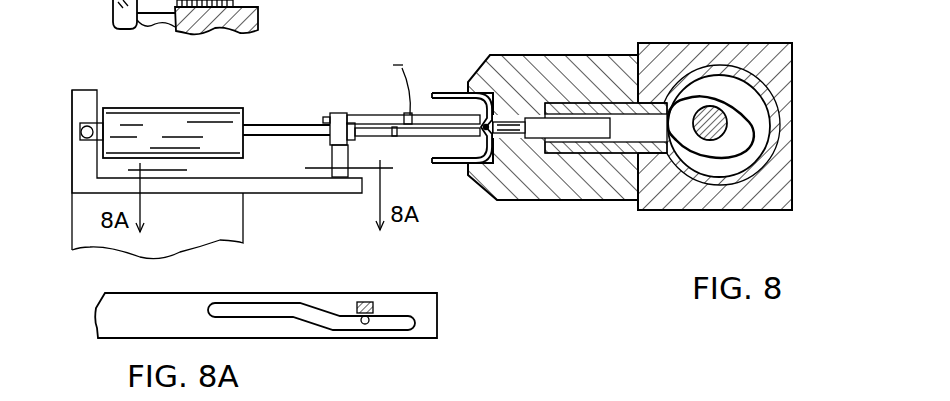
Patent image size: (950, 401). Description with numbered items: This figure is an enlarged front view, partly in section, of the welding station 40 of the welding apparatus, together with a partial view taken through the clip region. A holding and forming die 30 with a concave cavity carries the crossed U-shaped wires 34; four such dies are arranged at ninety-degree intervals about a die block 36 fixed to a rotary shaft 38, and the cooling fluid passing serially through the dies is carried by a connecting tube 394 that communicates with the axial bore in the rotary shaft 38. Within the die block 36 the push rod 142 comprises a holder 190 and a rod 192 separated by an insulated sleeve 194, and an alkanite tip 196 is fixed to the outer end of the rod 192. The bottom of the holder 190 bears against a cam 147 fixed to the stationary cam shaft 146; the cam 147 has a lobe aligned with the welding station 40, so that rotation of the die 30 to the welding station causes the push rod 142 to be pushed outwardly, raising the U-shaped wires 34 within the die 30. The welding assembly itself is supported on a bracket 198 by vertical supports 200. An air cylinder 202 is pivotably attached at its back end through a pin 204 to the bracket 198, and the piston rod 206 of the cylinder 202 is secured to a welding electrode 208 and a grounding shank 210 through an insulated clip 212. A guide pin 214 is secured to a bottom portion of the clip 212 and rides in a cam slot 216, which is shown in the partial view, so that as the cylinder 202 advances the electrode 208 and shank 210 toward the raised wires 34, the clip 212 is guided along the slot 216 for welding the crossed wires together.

In FIG. 8, the holding and forming die 30 is at (497, 72).
In FIG. 8, the U-shaped wires 34 is at (432, 93).
In FIG. 8, the die block 36 is at (775, 70).
In FIG. 8, the rotary shaft 38 is at (772, 85).
In FIG. 8, the welding station 40 is at (508, 225).
In FIG. 8, the push rod 142 is at (562, 101).
In FIG. 8, the stationary cam shaft 146 is at (728, 122).
In FIG. 8, the cam 147 is at (735, 143).
In FIG. 8, the holder 190 is at (640, 130).
In FIG. 8, the rod 192 is at (552, 125).
In FIG. 8, the insulated sleeve 194 is at (532, 138).
In FIG. 8, the alkanite tip 196 is at (505, 115).
In FIG. 8, the bracket 198 is at (85, 173).
In FIG. 8, the vertical supports 200 is at (218, 213).
In FIG. 8, the air cylinder 202 is at (155, 128).
In FIG. 8, the pin 204 is at (83, 130).
In FIG. 8, the piston rod 206 is at (298, 127).
In FIG. 8, the welding electrode 208 is at (368, 132).
In FIG. 8, the grounding shank 210 is at (385, 117).
In FIG. 8, the insulated clip 212 is at (340, 132).
In FIG. 8A, the insulated clip 212 is at (374, 302).
In FIG. 8A, the guide pin 214 is at (369, 318).
In FIG. 8A, the cam slot 216 is at (390, 318).
In FIG. 8, the connecting tube 394 is at (478, 0).